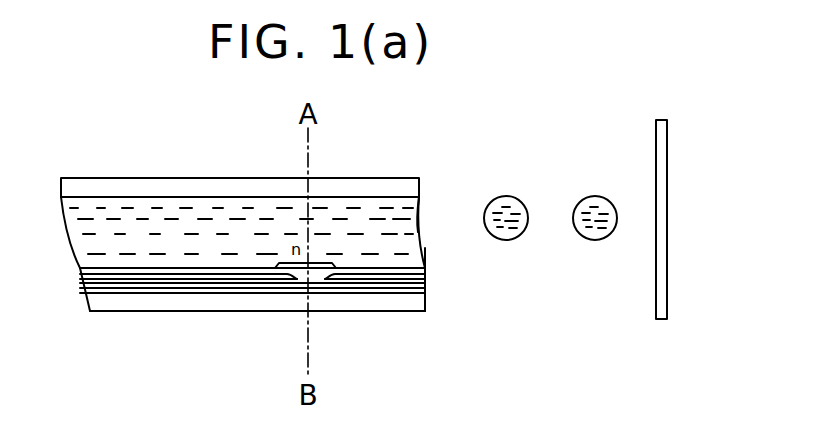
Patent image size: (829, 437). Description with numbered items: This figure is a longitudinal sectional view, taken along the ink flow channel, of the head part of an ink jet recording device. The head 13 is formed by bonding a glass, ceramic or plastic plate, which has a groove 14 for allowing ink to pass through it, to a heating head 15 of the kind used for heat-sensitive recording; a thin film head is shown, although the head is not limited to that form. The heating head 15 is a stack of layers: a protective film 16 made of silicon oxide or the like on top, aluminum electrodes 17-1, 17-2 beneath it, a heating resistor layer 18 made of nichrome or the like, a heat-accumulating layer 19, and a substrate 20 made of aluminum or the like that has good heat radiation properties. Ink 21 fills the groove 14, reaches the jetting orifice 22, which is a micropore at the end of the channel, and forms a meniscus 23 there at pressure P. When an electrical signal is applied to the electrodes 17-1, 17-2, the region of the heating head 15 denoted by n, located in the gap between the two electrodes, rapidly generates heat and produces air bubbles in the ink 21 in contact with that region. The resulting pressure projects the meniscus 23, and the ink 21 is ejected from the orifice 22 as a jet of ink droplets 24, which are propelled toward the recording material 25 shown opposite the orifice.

The head 13 is at (152, 178).
The groove 14 is at (227, 197).
The heating head 15 is at (65, 270).
The protective film 16 is at (118, 270).
The aluminum electrode 17-1 is at (164, 284).
The aluminum electrode 17-2 is at (393, 279).
The heating resistor layer 18 is at (210, 293).
The heat-accumulating layer 19 is at (266, 297).
The substrate 20 is at (343, 312).
The ink 21 is at (88, 203).
The jetting orifice 22 is at (425, 248).
The meniscus 23 is at (418, 230).
The ink droplets 24 is at (618, 197).
The recording material 25 is at (656, 163).